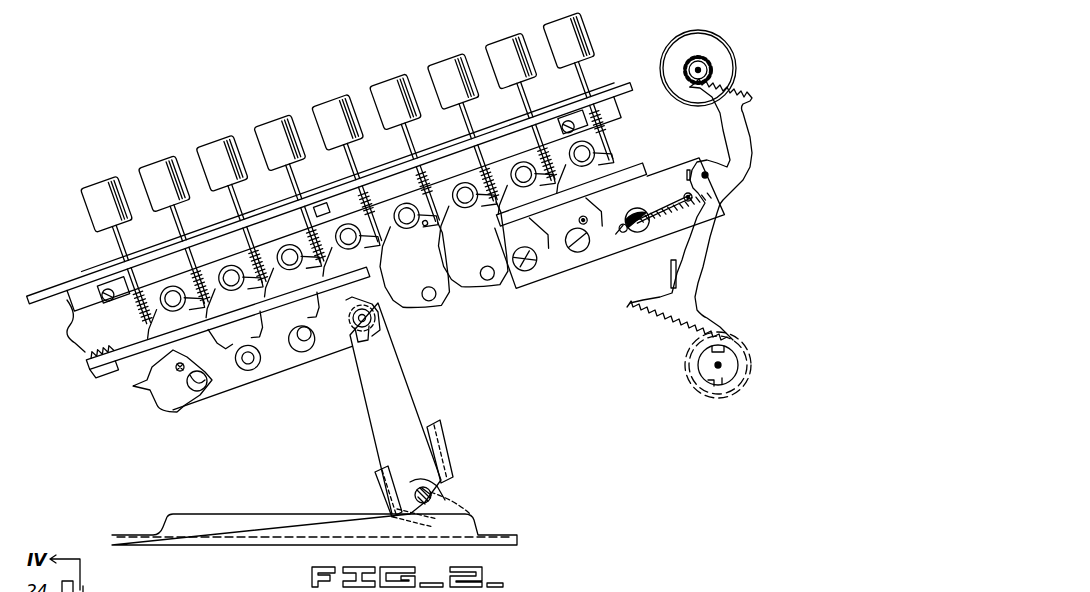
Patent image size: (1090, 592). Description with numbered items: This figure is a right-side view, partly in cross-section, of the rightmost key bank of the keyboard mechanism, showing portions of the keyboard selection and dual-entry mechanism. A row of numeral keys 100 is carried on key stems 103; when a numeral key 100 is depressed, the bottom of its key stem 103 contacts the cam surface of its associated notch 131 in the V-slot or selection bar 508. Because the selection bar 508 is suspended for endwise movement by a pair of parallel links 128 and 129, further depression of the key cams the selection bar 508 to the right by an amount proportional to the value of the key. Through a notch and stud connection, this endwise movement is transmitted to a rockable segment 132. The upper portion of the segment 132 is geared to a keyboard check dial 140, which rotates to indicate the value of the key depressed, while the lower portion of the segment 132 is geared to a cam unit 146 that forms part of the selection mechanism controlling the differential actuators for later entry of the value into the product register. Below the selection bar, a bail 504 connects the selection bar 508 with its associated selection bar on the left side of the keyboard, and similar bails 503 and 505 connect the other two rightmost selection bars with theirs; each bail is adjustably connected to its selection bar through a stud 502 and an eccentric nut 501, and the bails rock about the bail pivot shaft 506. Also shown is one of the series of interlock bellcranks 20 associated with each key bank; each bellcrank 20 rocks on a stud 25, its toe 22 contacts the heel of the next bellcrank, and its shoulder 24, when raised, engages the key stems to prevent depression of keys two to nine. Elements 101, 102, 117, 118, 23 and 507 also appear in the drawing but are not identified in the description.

The numeral key 100 is at (330, 98).
The key rail 101 is at (67, 284).
The threaded key stem portion 102 is at (205, 276).
The key stem 103 is at (296, 178).
The mounting plate 117 is at (110, 367).
The spring 118 is at (88, 356).
The parallel link 128 is at (168, 380).
The parallel link 129 is at (620, 160).
The notch 131 is at (234, 383).
The rockable segment 132 is at (708, 254).
The keyboard check dial 140 is at (732, 45).
The cam unit 146 is at (700, 357).
The interlock bellcrank 20 is at (400, 264).
The toe 22 is at (440, 296).
The pin 23 is at (436, 215).
The shoulder 24 is at (437, 226).
The stud 25 is at (405, 202).
The eccentric nut 501 is at (362, 342).
The stud 502 is at (364, 320).
The bail 503 is at (448, 447).
The bail 504 is at (400, 398).
The bail 505 is at (377, 490).
The bail pivot shaft 506 is at (433, 497).
The base plate 507 is at (228, 527).
The selection bar 508 is at (173, 406).